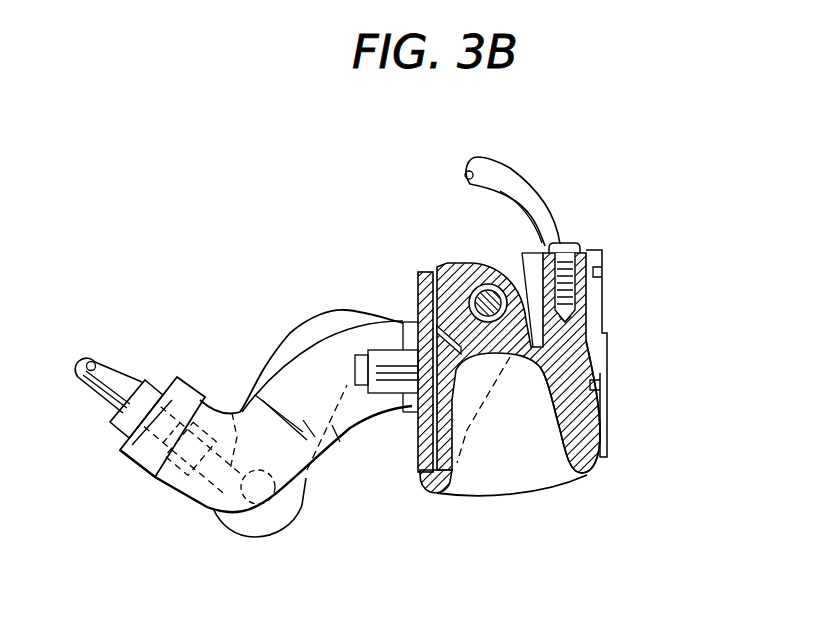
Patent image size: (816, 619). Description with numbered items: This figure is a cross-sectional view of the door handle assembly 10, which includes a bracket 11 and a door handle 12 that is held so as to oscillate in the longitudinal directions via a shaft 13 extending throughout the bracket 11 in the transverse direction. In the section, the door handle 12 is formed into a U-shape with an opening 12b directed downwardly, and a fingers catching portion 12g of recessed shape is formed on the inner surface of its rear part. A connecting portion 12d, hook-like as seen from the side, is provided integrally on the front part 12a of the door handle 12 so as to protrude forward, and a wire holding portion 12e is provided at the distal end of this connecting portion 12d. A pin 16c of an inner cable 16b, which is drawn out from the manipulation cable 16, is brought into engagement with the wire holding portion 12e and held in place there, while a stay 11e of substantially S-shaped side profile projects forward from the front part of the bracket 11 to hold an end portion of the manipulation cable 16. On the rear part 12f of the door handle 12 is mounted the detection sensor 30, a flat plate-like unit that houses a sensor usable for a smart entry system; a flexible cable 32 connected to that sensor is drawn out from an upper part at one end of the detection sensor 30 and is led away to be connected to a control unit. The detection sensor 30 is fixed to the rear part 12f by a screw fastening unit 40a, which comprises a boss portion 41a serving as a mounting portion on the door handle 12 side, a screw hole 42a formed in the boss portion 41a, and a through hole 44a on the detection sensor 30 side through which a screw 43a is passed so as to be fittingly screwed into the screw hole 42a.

The door handle assembly 10 is at (211, 218).
The bracket 11 is at (418, 280).
The stay 11e is at (160, 473).
The door handle 12 is at (510, 480).
The front part 12a is at (446, 335).
The opening 12b is at (463, 514).
The connecting portion 12d is at (290, 503).
The wire holding portion 12e is at (278, 518).
The rear part 12f is at (619, 395).
The fingers catching portion 12g is at (555, 444).
The shaft 13 is at (488, 283).
The manipulation cable 16 is at (119, 378).
The inner cable 16b is at (212, 440).
The pin 16c is at (213, 513).
The detection sensor 30 is at (597, 352).
The cable 32 is at (543, 200).
The screw fastening unit 40a is at (643, 279).
The boss portion 41a is at (617, 328).
The screw hole 42a is at (602, 290).
The screw 43a is at (582, 241).
The through hole 44a is at (601, 267).